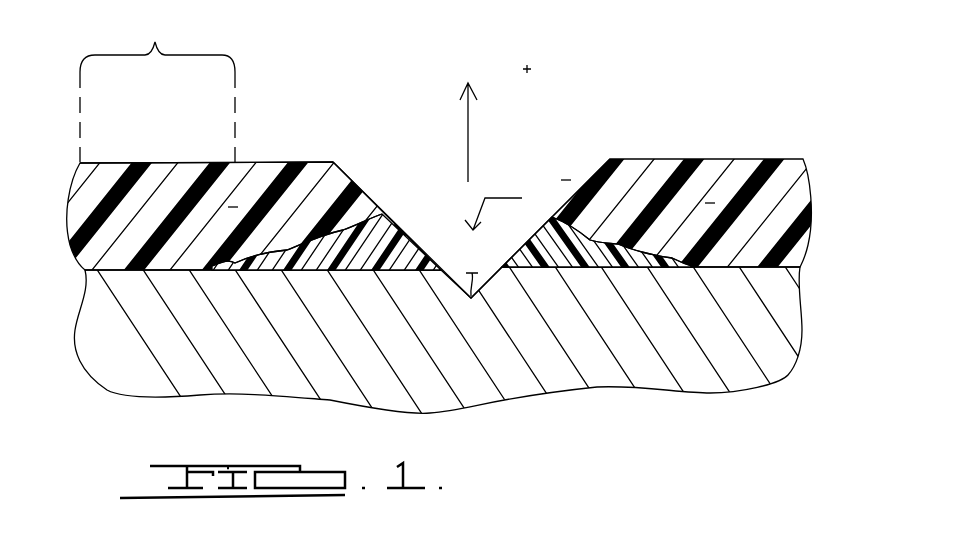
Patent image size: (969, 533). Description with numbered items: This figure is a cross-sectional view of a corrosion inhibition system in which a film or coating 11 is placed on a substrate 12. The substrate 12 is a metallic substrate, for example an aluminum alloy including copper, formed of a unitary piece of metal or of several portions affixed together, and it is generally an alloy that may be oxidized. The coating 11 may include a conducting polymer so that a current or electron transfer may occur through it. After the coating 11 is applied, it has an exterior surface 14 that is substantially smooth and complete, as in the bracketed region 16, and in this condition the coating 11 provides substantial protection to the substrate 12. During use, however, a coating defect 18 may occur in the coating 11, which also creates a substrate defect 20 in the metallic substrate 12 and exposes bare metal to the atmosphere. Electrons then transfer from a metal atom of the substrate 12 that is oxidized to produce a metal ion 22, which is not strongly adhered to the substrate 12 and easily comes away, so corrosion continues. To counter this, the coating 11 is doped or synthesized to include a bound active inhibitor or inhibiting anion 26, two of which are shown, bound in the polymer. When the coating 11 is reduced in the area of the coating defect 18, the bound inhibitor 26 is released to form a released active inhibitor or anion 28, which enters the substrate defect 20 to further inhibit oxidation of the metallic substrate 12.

The coating 11 is at (118, 245).
The substrate 12 is at (157, 354).
The exterior surface 14 is at (172, 162).
The region 16 is at (155, 42).
The coating defect 18 is at (411, 171).
The substrate defect 20 is at (471, 296).
The metal ion 22 is at (478, 77).
The bound active inhibitor 26 is at (222, 198).
The released active inhibitor 28 is at (544, 177).